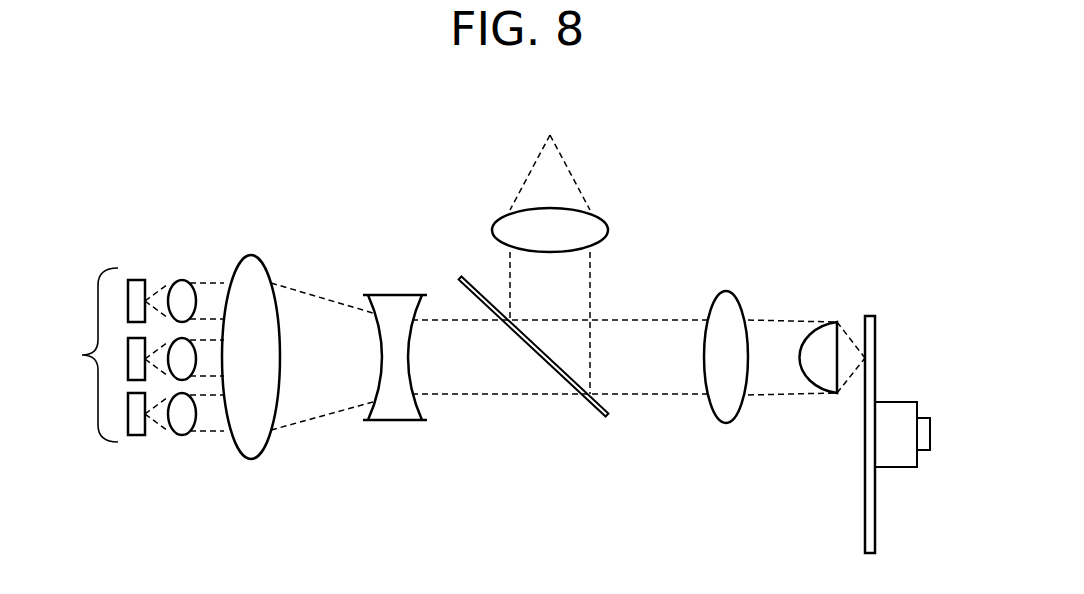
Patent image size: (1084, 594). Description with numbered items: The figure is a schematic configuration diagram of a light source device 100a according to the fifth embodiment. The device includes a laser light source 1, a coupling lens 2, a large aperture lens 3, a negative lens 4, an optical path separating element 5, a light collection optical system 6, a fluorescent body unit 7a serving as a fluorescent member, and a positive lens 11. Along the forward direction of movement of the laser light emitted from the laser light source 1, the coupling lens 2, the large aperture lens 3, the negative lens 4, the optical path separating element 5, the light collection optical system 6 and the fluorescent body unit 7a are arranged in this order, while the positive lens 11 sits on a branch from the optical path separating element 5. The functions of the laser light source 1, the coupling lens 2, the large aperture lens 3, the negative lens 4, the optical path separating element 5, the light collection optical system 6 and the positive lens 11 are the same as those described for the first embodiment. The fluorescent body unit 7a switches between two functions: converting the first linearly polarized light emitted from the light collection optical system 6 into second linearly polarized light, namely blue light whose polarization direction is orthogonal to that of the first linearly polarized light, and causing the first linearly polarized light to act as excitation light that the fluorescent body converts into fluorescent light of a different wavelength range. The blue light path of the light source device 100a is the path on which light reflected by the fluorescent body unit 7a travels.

The light source device 100a is at (805, 124).
The laser light source 1 is at (99, 355).
The coupling lens 2 is at (183, 436).
The large aperture lens 3 is at (251, 255).
The negative lens 4 is at (397, 418).
The optical path separating element 5 is at (550, 372).
The light collection optical system 6 is at (832, 394).
The fluorescent body unit 7a is at (875, 480).
The positive lens 11 is at (608, 228).